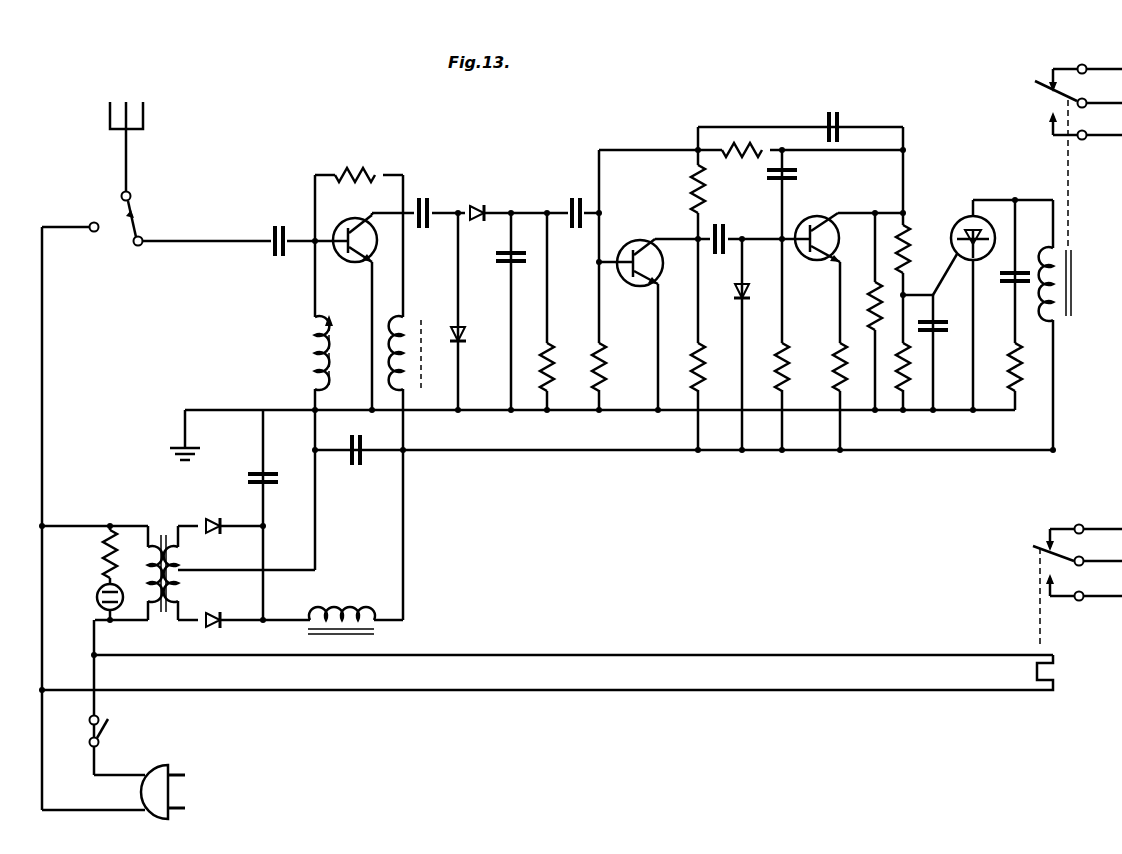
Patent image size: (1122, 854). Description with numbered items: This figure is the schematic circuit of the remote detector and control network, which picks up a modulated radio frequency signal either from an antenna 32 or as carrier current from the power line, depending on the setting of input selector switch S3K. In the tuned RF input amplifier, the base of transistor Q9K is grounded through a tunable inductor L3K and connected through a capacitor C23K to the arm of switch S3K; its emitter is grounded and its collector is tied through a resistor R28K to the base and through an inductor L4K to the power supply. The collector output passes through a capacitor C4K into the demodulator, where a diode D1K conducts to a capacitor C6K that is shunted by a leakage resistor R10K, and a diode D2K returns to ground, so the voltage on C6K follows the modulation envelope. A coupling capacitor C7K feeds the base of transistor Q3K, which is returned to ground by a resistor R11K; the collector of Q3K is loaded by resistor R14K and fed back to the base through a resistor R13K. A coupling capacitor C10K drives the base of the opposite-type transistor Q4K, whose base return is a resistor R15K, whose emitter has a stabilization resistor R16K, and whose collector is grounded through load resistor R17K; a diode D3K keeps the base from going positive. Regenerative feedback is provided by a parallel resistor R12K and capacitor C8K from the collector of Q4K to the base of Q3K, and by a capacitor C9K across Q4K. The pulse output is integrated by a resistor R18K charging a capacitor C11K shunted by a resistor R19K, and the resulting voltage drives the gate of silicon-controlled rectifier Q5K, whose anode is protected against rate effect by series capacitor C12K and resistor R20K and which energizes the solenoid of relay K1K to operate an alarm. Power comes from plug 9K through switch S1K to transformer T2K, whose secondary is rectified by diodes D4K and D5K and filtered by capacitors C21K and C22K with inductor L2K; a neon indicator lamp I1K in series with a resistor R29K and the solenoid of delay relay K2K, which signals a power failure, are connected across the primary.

The antenna 32 is at (118, 94).
The input selector switch S3K is at (177, 229).
The capacitor C23K is at (276, 222).
The resistor R28K is at (365, 153).
The transistor Q9K is at (368, 226).
The tunable inductor L3K is at (295, 325).
The inductor L4K is at (420, 454).
The capacitor C4K is at (428, 197).
The diode D1K is at (480, 203).
The diode D2K is at (467, 332).
The capacitor C6K is at (492, 262).
The coupling capacitor C7K is at (578, 187).
The leakage resistor R10K is at (560, 345).
The resistor R11K is at (606, 348).
The transistor Q3K is at (645, 240).
The resistor R13K is at (692, 186).
The resistor R12K is at (736, 167).
The coupling capacitor C10K is at (722, 224).
The load resistor R14K is at (720, 372).
The diode D3K is at (730, 288).
The capacitor C8K is at (836, 111).
The capacitor C9K is at (800, 178).
The transistor Q4K is at (826, 212).
The resistor R15K is at (788, 348).
The emitter stabilization resistor R16K is at (835, 374).
The load resistor R17K is at (866, 292).
The resistor R18K is at (915, 240).
The resistor R19K is at (897, 395).
The capacitor C11K is at (948, 330).
The silicon-controlled rectifier Q5K is at (962, 212).
The capacitor C12K is at (998, 282).
The resistor R20K is at (1022, 382).
The relay K1K is at (1078, 178).
The delay relay K2K is at (1077, 585).
The capacitor C22K is at (350, 468).
The capacitor C21K is at (242, 480).
The diode D4K is at (212, 517).
The diode D5K is at (216, 612).
The transformer T2K is at (161, 532).
The resistor R29K is at (100, 556).
The neon indicator lamp I1K is at (96, 592).
The inductor L2K is at (346, 610).
The switch S1K is at (120, 731).
The plug 9K is at (181, 792).